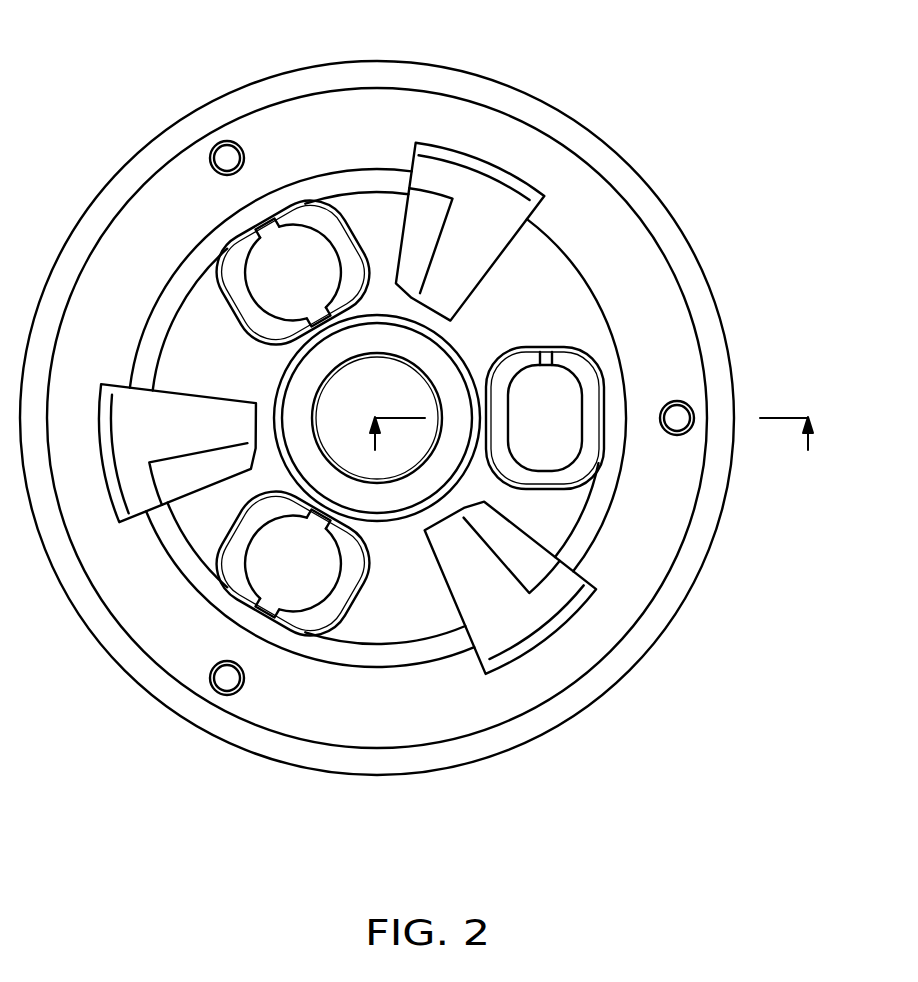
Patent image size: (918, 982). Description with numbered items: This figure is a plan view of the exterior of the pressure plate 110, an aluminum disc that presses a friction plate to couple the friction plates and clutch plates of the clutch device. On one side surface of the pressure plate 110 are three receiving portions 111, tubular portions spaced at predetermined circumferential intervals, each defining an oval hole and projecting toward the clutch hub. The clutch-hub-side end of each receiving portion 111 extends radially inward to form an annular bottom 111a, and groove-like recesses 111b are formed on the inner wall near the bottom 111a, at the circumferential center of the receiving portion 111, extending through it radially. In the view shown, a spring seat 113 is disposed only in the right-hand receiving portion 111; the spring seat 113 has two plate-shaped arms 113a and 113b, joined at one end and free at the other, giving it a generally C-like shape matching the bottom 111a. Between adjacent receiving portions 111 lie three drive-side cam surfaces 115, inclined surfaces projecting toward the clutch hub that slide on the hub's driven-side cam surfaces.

The pressure plate 110 is at (158, 60).
The receiving portion 111 is at (247, 307).
The bottom 111a is at (344, 607).
The recess 111b is at (276, 228).
The spring seat 113 is at (576, 404).
The arm 113a is at (586, 358).
The arm 113b is at (500, 390).
The drive-side cam surface 115 is at (173, 466).